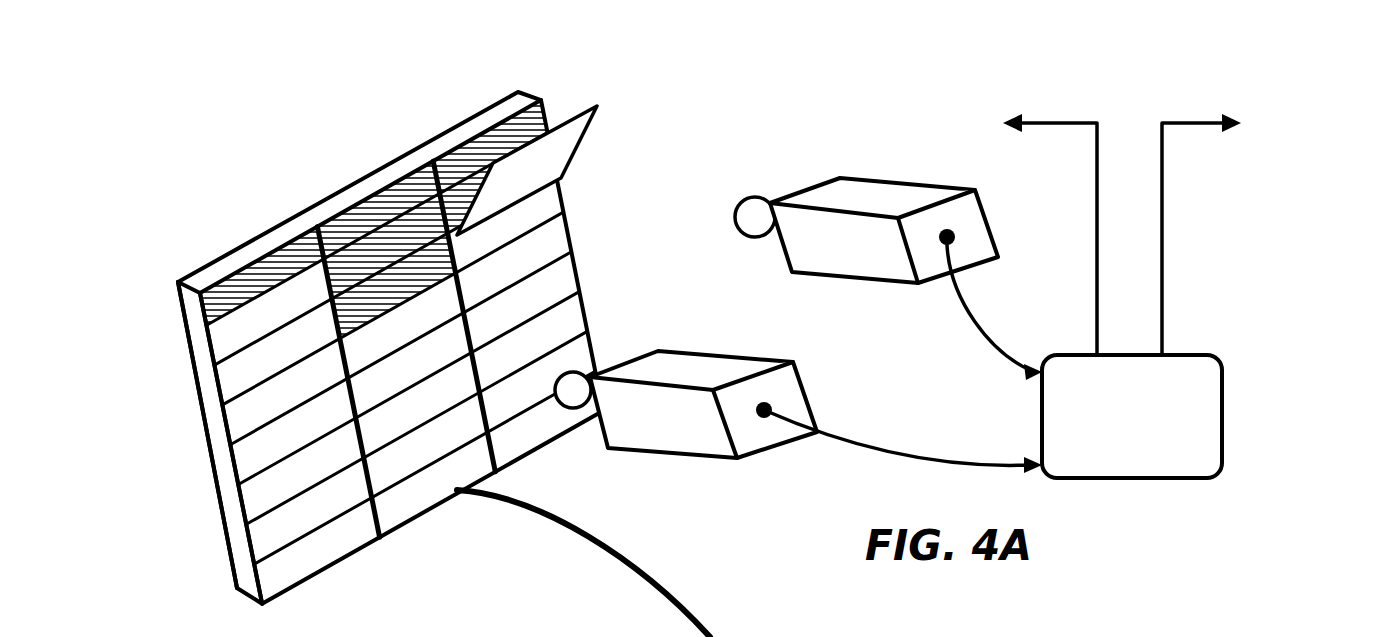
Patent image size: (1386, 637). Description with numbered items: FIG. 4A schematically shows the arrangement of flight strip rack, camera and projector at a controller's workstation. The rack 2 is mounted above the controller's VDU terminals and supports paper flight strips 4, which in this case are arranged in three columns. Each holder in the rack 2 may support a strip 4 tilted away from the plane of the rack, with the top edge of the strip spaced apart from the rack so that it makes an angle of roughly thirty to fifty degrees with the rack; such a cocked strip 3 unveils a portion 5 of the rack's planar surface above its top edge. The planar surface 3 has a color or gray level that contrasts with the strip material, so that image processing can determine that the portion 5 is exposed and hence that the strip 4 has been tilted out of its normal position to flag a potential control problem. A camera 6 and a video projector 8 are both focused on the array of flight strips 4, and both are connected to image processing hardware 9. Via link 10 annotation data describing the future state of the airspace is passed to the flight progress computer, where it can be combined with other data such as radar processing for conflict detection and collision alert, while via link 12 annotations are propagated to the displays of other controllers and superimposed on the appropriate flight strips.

The rack 2 is at (352, 187).
The planar surface 3 is at (528, 123).
The paper flight strips 4 is at (258, 502).
The exposed portion 5 is at (452, 200).
The camera 6 is at (853, 257).
The video projector 8 is at (683, 365).
The image processing hardware 9 is at (1225, 418).
The link 10 is at (1092, 256).
The link 12 is at (1164, 247).